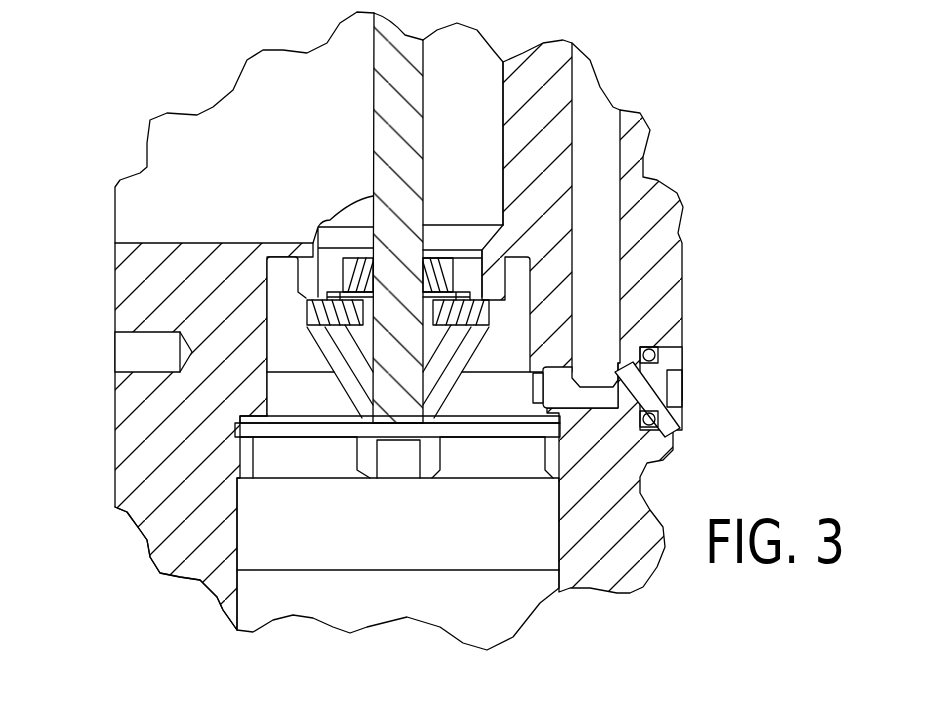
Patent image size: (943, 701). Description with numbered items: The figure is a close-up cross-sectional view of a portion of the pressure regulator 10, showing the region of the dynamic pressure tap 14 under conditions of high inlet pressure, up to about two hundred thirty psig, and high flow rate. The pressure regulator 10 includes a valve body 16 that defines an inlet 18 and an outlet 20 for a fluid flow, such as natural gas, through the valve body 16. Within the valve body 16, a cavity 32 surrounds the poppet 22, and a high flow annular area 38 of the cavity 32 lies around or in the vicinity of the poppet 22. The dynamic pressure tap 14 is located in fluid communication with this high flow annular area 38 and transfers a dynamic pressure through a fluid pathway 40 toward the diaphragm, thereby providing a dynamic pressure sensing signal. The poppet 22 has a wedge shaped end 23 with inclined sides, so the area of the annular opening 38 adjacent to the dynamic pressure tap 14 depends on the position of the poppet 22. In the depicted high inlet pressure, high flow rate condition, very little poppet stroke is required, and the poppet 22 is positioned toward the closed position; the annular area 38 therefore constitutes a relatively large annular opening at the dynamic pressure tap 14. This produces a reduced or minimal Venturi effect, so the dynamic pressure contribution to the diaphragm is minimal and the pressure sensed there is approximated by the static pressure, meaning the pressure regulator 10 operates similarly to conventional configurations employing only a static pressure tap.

The pressure regulator 10 is at (101, 93).
The dynamic pressure tap 14 is at (537, 390).
The valve body 16 is at (157, 540).
The inlet 18 is at (173, 172).
The outlet 20 is at (463, 623).
The poppet 22 is at (388, 348).
The wedge shaped end 23 is at (342, 368).
The cavity 32 is at (282, 290).
The high flow annular area 38 is at (513, 402).
The fluid pathway 40 is at (603, 190).